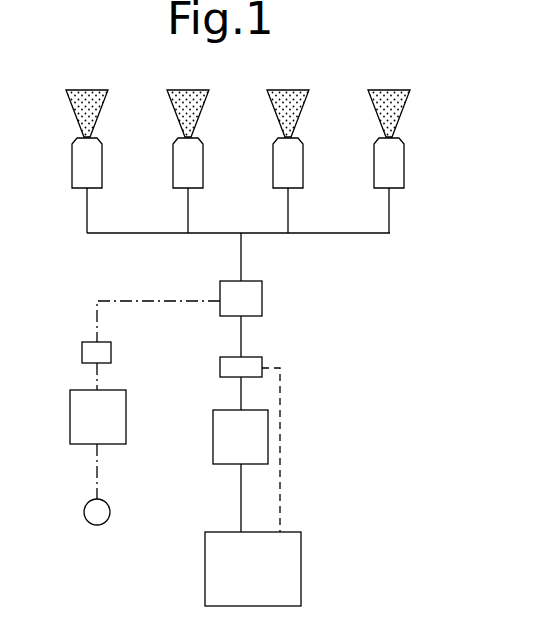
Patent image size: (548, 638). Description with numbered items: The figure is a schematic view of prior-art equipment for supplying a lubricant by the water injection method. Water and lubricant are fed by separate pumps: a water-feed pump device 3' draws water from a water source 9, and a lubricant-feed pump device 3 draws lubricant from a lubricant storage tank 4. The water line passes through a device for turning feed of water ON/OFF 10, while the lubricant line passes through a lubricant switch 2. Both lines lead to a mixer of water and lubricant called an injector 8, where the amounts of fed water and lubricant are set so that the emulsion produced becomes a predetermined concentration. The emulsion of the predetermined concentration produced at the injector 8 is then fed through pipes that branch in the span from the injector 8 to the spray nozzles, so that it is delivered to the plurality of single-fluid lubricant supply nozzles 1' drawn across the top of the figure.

The lubricant supply nozzle 1' is at (226, 161).
The injector 8 is at (251, 298).
The lubricant switch 2 is at (229, 369).
The pump device (lubricant discharge use) 3 is at (229, 437).
The lubricant storage tank 4 is at (241, 569).
The device for turning feed of water ON/OFF 10 is at (76, 354).
The pump device (water discharge use) 3' is at (86, 417).
The water source 9 is at (87, 513).